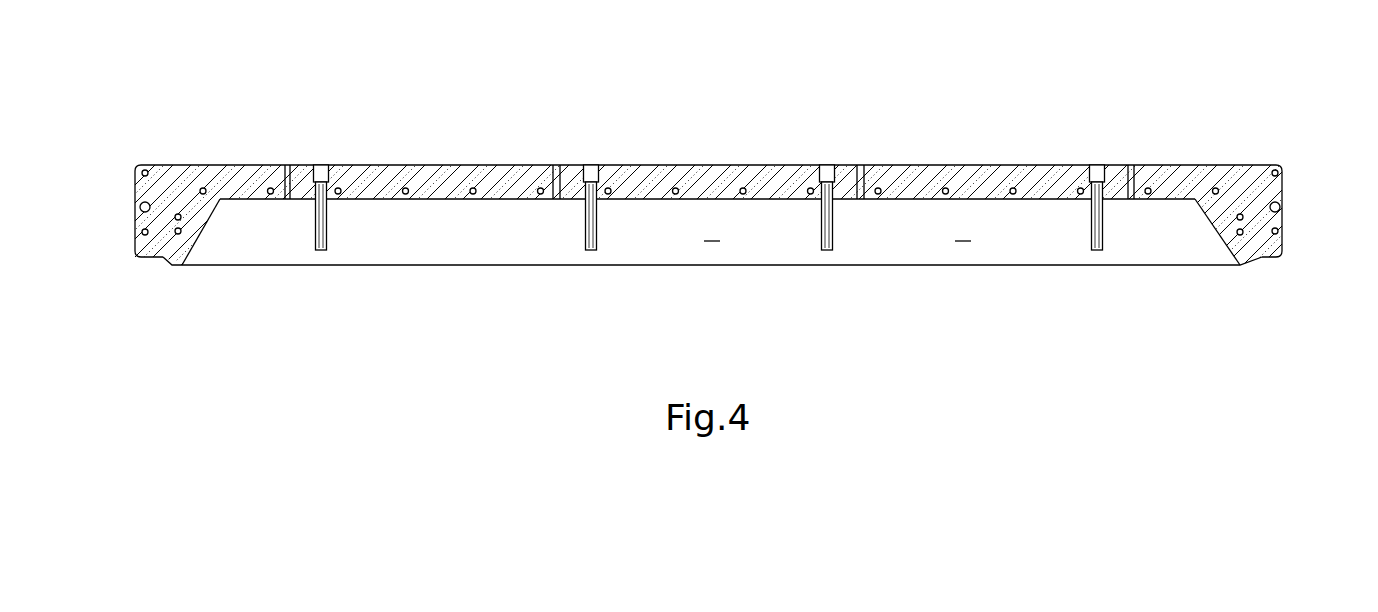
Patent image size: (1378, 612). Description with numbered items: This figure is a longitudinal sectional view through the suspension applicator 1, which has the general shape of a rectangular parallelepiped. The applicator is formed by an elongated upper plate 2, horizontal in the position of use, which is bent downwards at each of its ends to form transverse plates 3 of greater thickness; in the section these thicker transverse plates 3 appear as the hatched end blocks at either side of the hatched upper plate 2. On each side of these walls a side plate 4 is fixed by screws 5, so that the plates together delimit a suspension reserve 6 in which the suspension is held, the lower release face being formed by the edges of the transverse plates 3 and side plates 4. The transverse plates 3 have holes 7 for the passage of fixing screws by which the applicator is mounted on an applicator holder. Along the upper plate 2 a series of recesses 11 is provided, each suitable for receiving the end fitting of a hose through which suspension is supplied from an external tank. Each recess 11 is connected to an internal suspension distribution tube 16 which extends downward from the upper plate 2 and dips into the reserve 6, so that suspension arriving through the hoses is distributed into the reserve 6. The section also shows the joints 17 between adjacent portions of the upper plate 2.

The suspension applicator 1 is at (990, 296).
The upper plate 2 is at (767, 165).
The transverse plate 3 is at (150, 220).
The side plate 4 is at (712, 231).
The screw 5 is at (204, 165).
The suspension reserve 6 is at (963, 231).
The hole 7 is at (140, 207).
The recess 11 is at (322, 165).
The internal suspension distribution tube 16 is at (328, 237).
The joint 17 is at (250, 165).